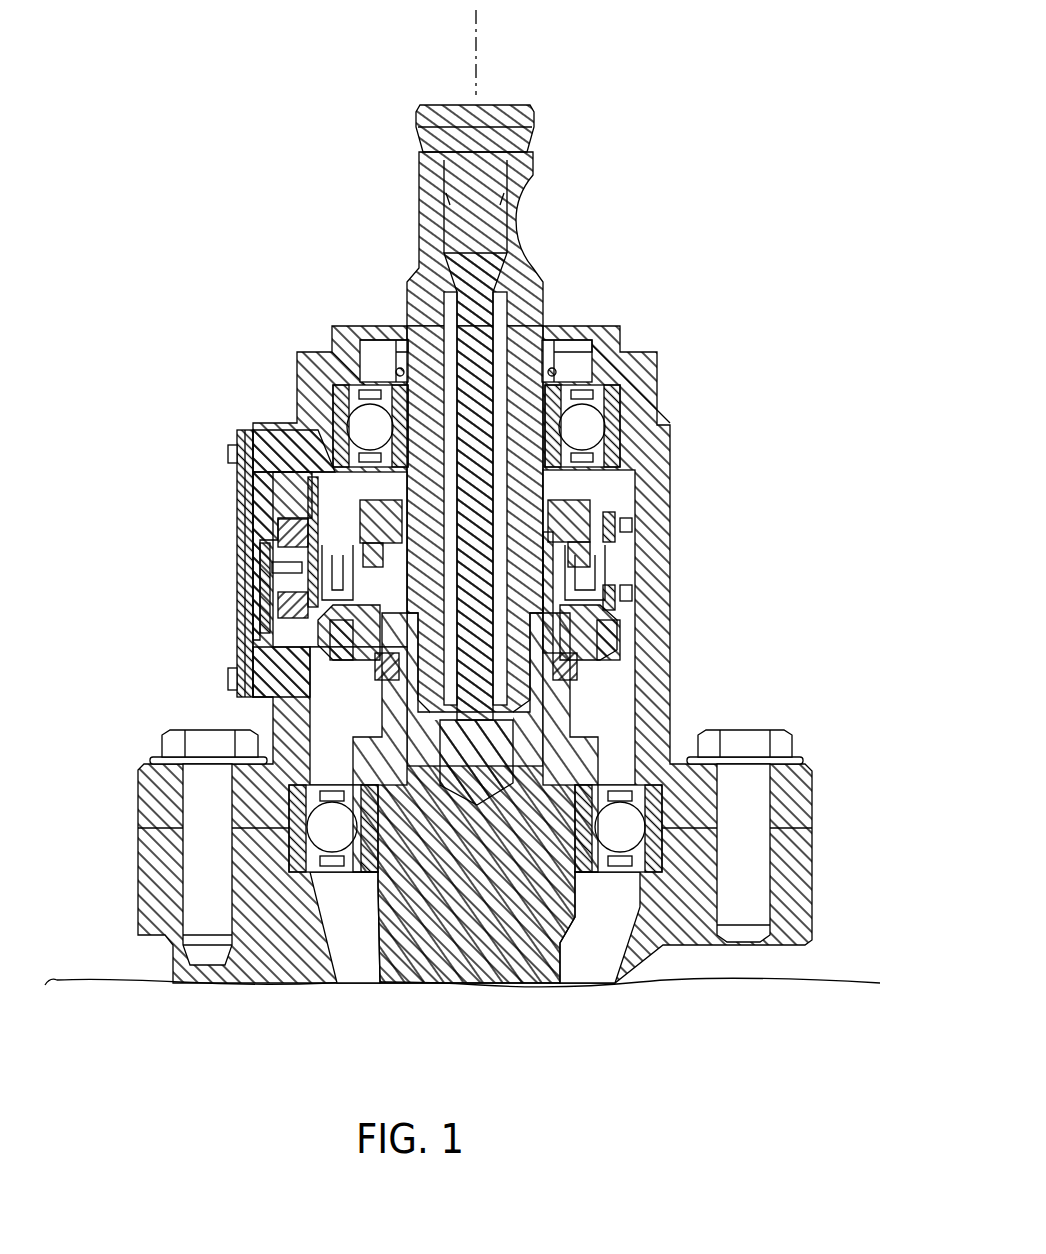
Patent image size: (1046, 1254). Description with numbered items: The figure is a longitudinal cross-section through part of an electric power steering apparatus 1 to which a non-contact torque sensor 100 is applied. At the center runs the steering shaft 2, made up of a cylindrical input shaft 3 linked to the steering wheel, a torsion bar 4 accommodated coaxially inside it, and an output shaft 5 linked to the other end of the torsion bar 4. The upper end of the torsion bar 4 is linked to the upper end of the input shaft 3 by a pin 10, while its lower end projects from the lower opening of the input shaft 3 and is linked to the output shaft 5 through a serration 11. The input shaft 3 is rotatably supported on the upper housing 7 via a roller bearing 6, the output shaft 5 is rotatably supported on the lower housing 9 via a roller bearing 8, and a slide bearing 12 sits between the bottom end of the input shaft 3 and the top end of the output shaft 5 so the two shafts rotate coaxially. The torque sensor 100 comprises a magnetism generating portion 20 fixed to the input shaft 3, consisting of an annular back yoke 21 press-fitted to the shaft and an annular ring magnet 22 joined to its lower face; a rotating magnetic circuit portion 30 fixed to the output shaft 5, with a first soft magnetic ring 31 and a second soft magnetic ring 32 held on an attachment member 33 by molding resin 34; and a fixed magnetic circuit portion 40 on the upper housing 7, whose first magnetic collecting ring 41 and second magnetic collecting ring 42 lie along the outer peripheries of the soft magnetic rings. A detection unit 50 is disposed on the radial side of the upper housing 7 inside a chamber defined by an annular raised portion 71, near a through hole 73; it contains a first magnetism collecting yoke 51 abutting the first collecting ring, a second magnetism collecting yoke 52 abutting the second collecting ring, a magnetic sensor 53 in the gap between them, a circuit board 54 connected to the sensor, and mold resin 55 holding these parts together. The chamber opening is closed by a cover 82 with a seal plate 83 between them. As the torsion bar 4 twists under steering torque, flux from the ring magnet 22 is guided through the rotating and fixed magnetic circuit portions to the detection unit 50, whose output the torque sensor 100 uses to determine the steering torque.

The electric power steering apparatus 1 is at (697, 112).
The steering shaft 2 is at (608, 250).
The input shaft 3 is at (530, 232).
The torsion bar 4 is at (478, 272).
The output shaft 5 is at (570, 745).
The roller bearing 6 is at (645, 397).
The upper housing 7 is at (665, 440).
The roller bearing 8 is at (660, 797).
The lower housing 9 is at (785, 878).
The pin 10 is at (532, 125).
The serration 11 is at (515, 745).
The slide bearing 12 is at (577, 667).
The magnetism generating portion 20 is at (747, 468).
The back yoke 21 is at (640, 492).
The ring magnet 22 is at (640, 510).
The rotating magnetic circuit portion 30 is at (819, 525).
The first soft magnetic ring 31 is at (640, 516).
The second soft magnetic ring 32 is at (640, 625).
The attachment member 33 is at (640, 645).
The molding resin 34 is at (640, 630).
The fixed magnetic circuit portion 40 is at (734, 545).
The first magnetic collecting ring 41 is at (640, 532).
The second magnetic collecting ring 42 is at (640, 595).
The detection unit 50 is at (151, 472).
The first magnetism collecting yoke 51 is at (270, 528).
The second magnetism collecting yoke 52 is at (270, 600).
The magnetic sensor 53 is at (262, 545).
The circuit board 54 is at (282, 570).
The mold resin 55 is at (263, 490).
The raised portion 71 is at (250, 662).
The through hole 73 is at (278, 432).
The cover 82 is at (240, 432).
The seal plate 83 is at (250, 432).
The torque sensor 100 is at (188, 426).